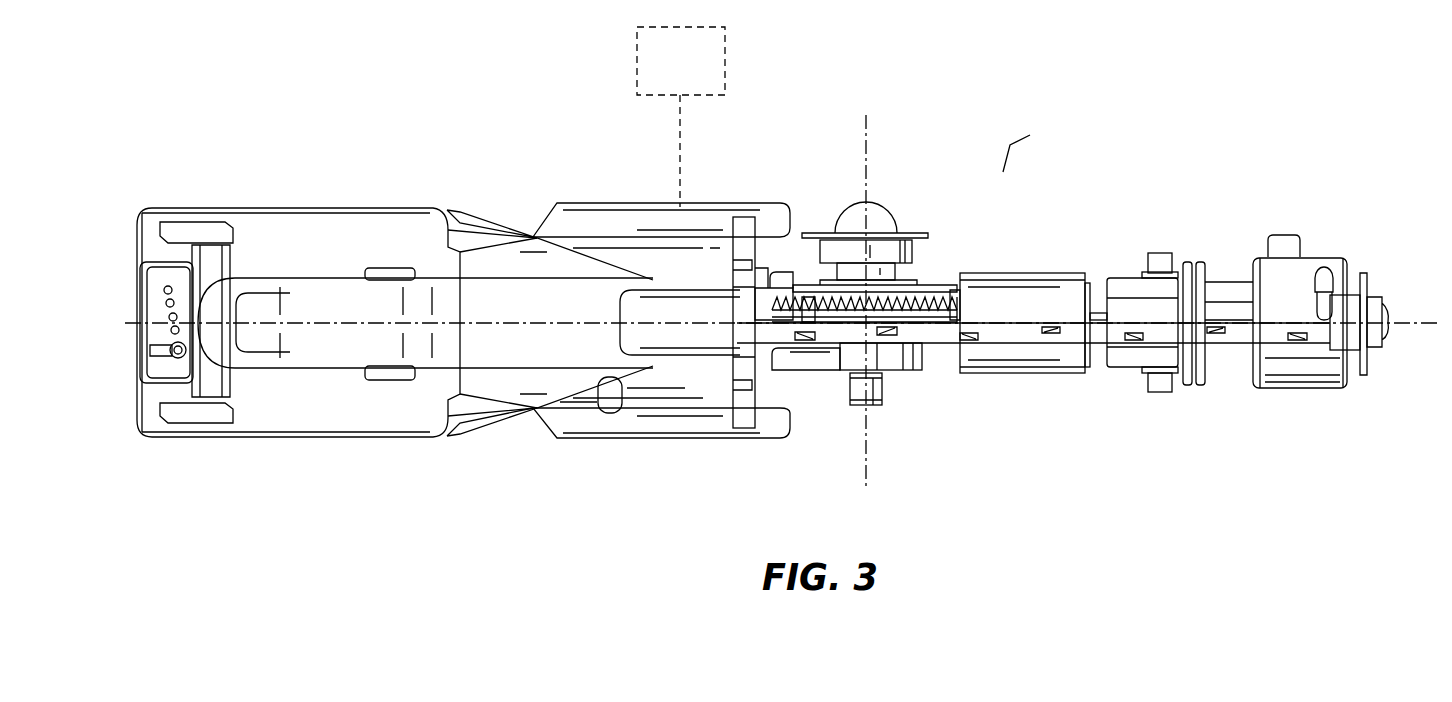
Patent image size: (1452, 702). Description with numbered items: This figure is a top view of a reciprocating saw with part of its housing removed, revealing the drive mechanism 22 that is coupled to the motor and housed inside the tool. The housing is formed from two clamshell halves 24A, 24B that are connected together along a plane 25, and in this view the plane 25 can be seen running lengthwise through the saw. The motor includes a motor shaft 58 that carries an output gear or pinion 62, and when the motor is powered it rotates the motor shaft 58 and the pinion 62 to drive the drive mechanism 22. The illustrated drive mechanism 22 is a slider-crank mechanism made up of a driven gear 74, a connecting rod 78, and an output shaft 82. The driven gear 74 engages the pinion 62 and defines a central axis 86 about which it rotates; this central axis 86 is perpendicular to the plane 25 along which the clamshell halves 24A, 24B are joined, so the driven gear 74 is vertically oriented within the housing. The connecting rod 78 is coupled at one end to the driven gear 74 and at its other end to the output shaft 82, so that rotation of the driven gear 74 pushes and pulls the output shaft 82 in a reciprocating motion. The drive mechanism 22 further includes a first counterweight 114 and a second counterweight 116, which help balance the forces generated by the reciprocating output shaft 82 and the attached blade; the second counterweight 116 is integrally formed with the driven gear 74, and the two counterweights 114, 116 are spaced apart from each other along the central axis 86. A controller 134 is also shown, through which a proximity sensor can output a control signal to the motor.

The drive mechanism 22 is at (1001, 176).
The clamshell half 24A is at (590, 422).
The clamshell half 24B is at (607, 225).
The plane 25 is at (1413, 320).
The motor shaft 58 is at (745, 218).
The pinion 62 is at (773, 300).
The driven gear 74 is at (928, 293).
The connecting rod 78 is at (940, 337).
The output shaft 82 is at (1228, 308).
The central axis 86 is at (870, 150).
The first counterweight 114 is at (827, 362).
The second counterweight 116 is at (935, 255).
The controller 134 is at (700, 76).